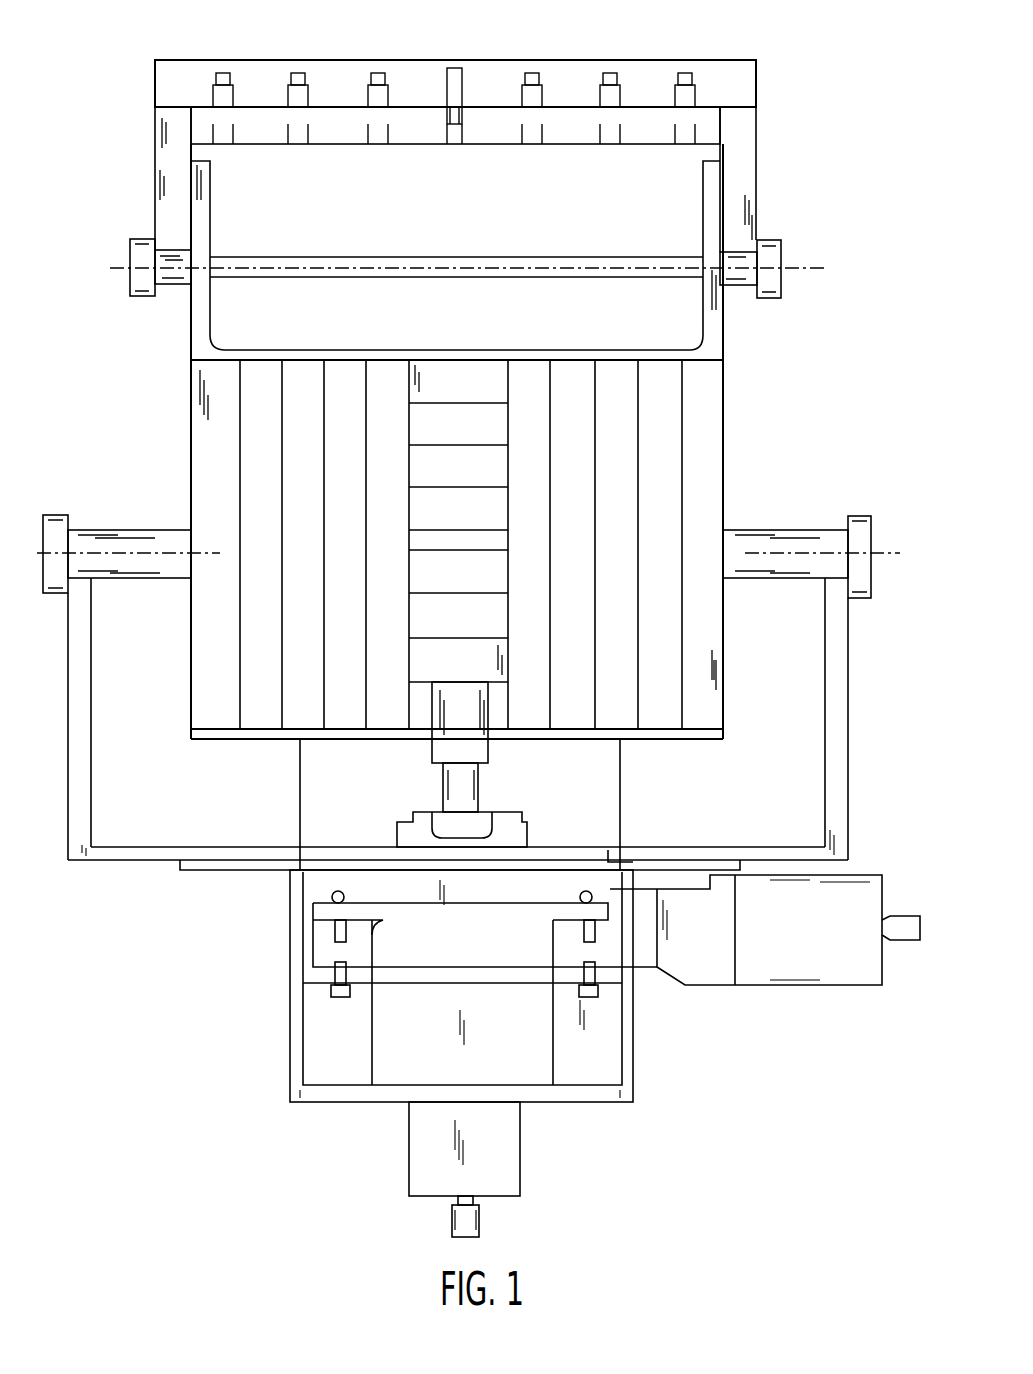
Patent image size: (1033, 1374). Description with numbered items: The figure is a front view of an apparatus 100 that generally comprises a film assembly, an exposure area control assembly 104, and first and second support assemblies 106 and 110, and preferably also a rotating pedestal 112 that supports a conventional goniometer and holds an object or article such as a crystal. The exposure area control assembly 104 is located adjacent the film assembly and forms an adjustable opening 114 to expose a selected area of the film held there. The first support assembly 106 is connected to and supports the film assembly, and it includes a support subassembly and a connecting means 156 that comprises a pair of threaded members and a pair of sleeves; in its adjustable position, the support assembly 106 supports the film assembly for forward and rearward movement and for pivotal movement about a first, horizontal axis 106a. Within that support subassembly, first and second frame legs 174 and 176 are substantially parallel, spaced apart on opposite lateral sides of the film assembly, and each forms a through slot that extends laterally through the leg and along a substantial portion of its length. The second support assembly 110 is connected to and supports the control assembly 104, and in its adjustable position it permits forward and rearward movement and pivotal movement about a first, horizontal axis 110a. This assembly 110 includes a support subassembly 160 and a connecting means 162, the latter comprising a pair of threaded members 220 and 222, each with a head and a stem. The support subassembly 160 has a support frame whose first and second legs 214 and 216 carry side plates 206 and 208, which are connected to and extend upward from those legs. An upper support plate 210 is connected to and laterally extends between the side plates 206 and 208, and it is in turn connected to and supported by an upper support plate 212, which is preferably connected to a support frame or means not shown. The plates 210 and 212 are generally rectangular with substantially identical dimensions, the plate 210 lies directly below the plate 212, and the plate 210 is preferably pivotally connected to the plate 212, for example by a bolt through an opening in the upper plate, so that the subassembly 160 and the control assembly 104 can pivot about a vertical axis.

The apparatus 100 is at (143, 40).
The exposure area control assembly 104 is at (523, 549).
The first support assembly 106 is at (127, 543).
The first horizontal axis 106a is at (884, 555).
The second support assembly 110 is at (778, 146).
The first horizontal axis 110a is at (783, 268).
The rotating pedestal 112 is at (405, 757).
The adjustable opening 114 is at (462, 545).
The connecting means 156 is at (811, 547).
The support subassembly 160 is at (433, 126).
The connecting means 162 is at (137, 305).
The first frame leg 174 is at (82, 570).
The second frame leg 176 is at (833, 568).
The side plate 206 is at (160, 136).
The side plate 208 is at (752, 138).
The upper support plate 210 is at (346, 130).
The upper support plate 212 is at (577, 70).
The first leg 214 is at (181, 284).
The second leg 216 is at (735, 287).
The threaded member 220 is at (146, 238).
The threaded member 222 is at (776, 259).